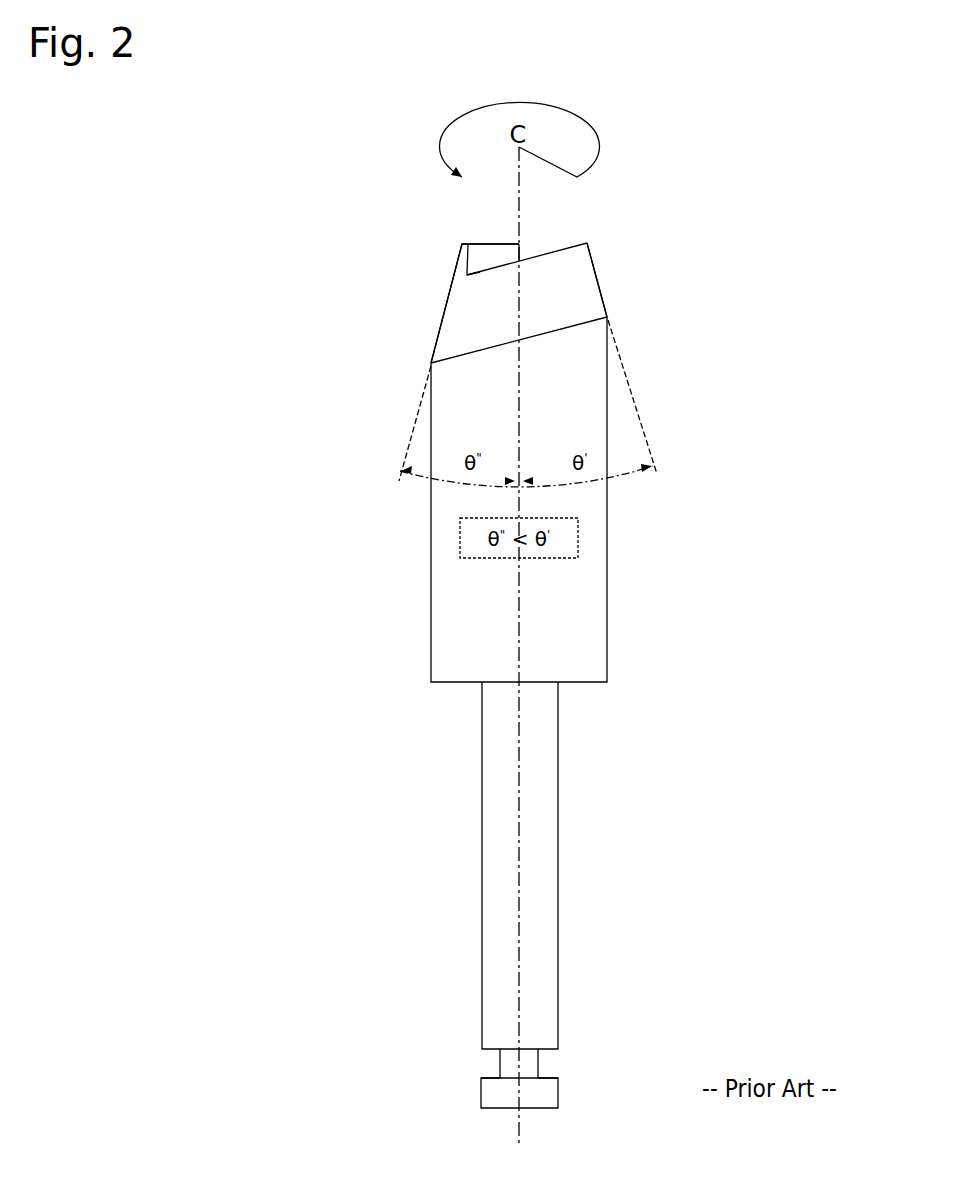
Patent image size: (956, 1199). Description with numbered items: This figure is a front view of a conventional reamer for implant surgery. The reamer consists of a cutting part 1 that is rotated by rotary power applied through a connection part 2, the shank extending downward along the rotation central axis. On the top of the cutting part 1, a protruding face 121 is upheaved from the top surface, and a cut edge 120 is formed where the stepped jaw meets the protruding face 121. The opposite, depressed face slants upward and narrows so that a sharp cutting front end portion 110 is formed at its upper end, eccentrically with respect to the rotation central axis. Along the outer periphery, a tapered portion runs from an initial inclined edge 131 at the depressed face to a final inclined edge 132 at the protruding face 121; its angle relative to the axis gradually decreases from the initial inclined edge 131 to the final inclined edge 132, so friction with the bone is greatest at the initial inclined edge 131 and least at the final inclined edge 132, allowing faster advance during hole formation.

The cutting part 1 is at (573, 462).
The connection part 2 is at (569, 895).
The cutting front end portion 110 is at (587, 243).
The cut edge 120 is at (487, 243).
The protruding face 121 is at (462, 244).
The initial inclined edge 131 is at (598, 279).
The final inclined edge 132 is at (443, 312).